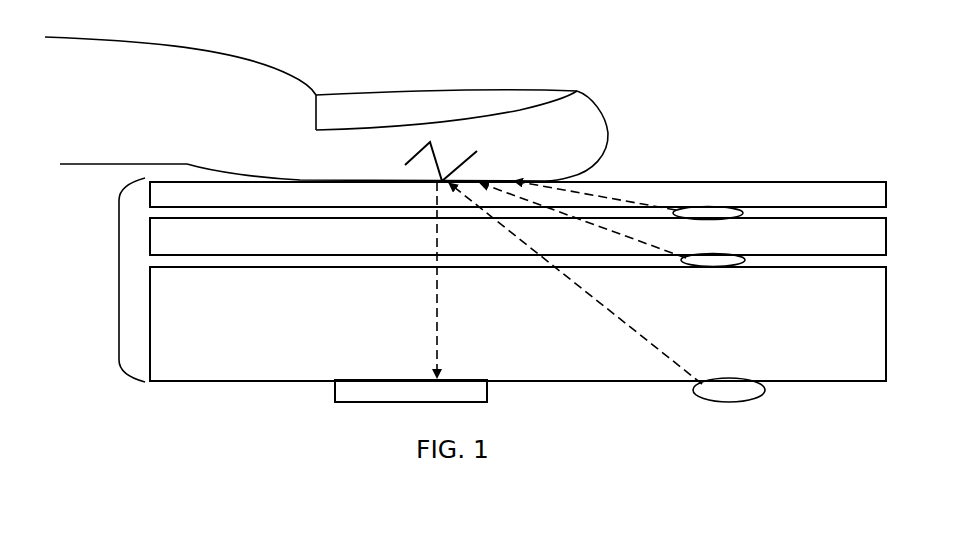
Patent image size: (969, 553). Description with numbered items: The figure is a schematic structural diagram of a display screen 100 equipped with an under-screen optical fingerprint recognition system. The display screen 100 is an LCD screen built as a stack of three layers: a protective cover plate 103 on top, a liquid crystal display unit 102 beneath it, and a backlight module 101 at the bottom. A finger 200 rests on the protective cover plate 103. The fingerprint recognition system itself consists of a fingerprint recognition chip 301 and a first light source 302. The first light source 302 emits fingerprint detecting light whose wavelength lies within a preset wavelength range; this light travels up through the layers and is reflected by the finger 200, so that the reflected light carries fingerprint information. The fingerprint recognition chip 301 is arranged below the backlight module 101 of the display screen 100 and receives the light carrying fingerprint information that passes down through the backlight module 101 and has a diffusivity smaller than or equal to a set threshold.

The display screen 100 is at (119, 281).
The backlight module 101 is at (518, 324).
The liquid crystal display unit 102 is at (518, 236).
The protective cover plate 103 is at (518, 194).
The finger 200 is at (326, 109).
The fingerprint recognition chip 301 is at (411, 292).
The first light source 302 is at (607, 292).